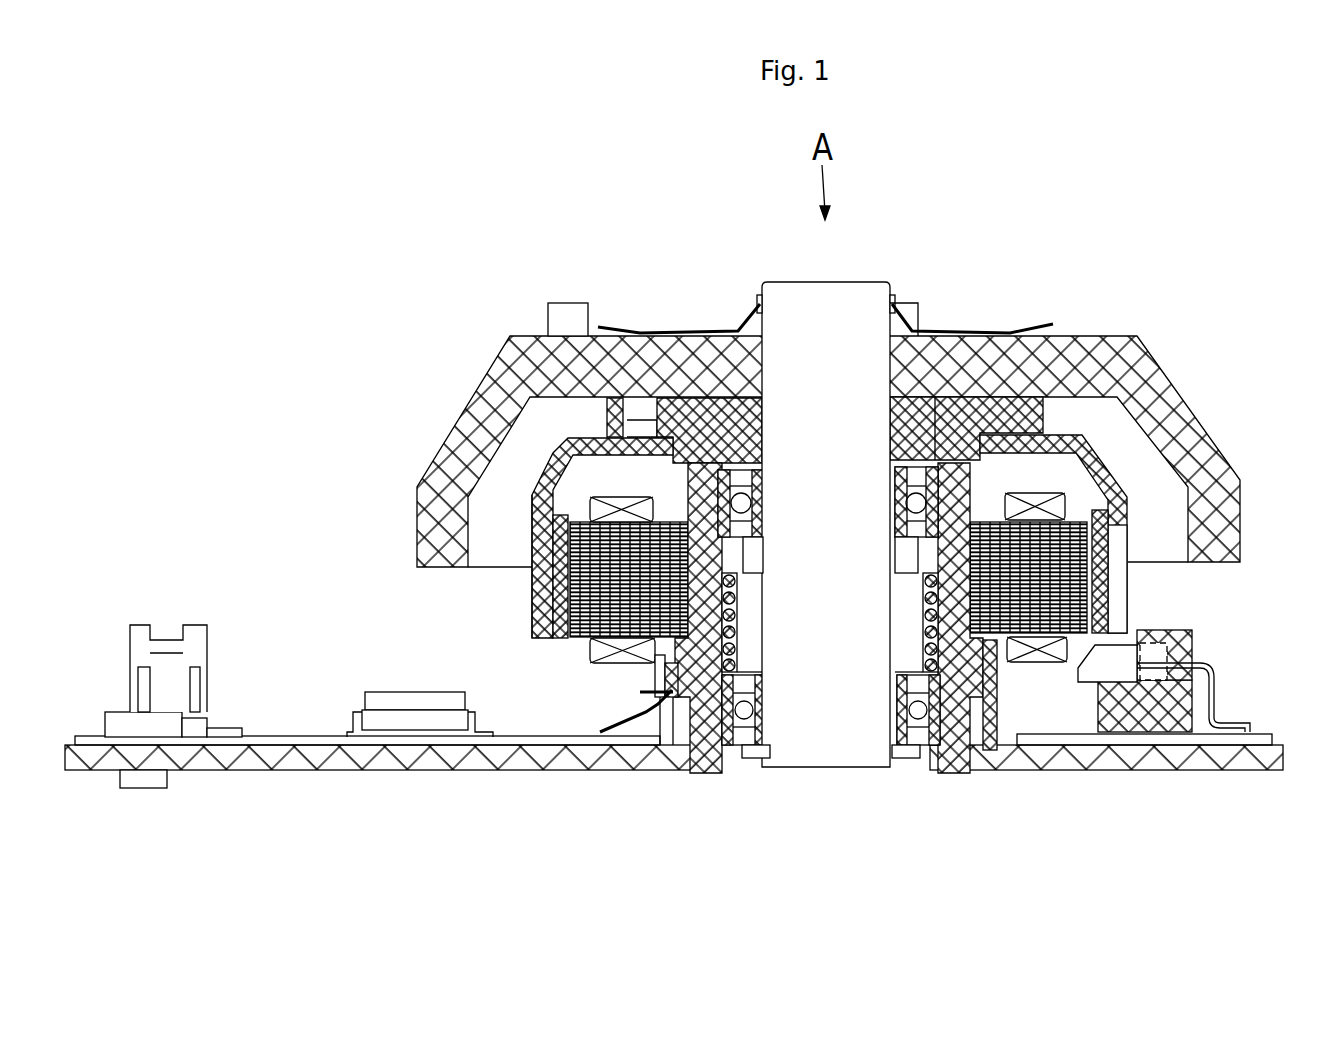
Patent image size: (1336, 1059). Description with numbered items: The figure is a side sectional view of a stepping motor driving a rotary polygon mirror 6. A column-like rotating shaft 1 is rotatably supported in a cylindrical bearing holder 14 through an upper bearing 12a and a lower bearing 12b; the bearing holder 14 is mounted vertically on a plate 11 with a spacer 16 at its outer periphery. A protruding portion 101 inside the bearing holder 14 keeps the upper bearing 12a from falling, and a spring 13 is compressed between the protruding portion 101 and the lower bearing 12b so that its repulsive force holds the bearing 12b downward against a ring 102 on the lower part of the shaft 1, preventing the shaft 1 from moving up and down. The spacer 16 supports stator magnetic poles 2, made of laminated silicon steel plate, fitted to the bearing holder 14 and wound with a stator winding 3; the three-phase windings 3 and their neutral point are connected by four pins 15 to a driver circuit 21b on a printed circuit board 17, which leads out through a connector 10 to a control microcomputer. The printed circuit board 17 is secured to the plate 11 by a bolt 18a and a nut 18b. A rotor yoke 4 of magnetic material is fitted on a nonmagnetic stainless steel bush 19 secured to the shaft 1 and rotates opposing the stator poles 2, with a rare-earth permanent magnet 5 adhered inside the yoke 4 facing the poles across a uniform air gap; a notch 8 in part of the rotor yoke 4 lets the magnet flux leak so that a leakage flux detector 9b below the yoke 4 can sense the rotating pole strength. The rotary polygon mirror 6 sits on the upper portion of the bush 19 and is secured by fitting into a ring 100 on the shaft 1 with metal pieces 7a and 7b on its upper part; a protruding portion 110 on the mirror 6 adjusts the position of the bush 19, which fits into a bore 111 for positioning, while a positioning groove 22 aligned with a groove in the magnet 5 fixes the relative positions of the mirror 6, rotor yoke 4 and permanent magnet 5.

The rotating shaft 1 is at (849, 297).
The stator magnetic poles 2 is at (600, 603).
The stator winding 3 is at (523, 336).
The rotor yoke 4 is at (612, 500).
The permanent magnet 5 is at (558, 545).
The rotary polygon mirror 6 is at (1193, 391).
The metal piece 7a is at (1042, 324).
The metal piece 7b is at (677, 328).
The notch 8 is at (1117, 553).
The leakage flux detector 9b is at (1103, 660).
The connector 10 is at (195, 632).
The plate 11 is at (1127, 757).
The upper bearing 12a is at (735, 478).
The lower bearing 12b is at (742, 748).
The spring 13 is at (758, 650).
The bearing holder 14 is at (705, 760).
The pins 15 is at (640, 740).
The spacer 16 is at (660, 700).
The printed circuit board 17 is at (283, 742).
The bolt 18a is at (110, 710).
The nut 18b is at (145, 788).
The bush 19 is at (690, 420).
The driver circuit 21b is at (405, 730).
The positioning groove 22 is at (548, 580).
The ring 100 is at (745, 292).
The protruding portion 101 is at (898, 555).
The ring 102 is at (760, 760).
The protruding portion 110 is at (615, 398).
The bore 111 is at (645, 425).